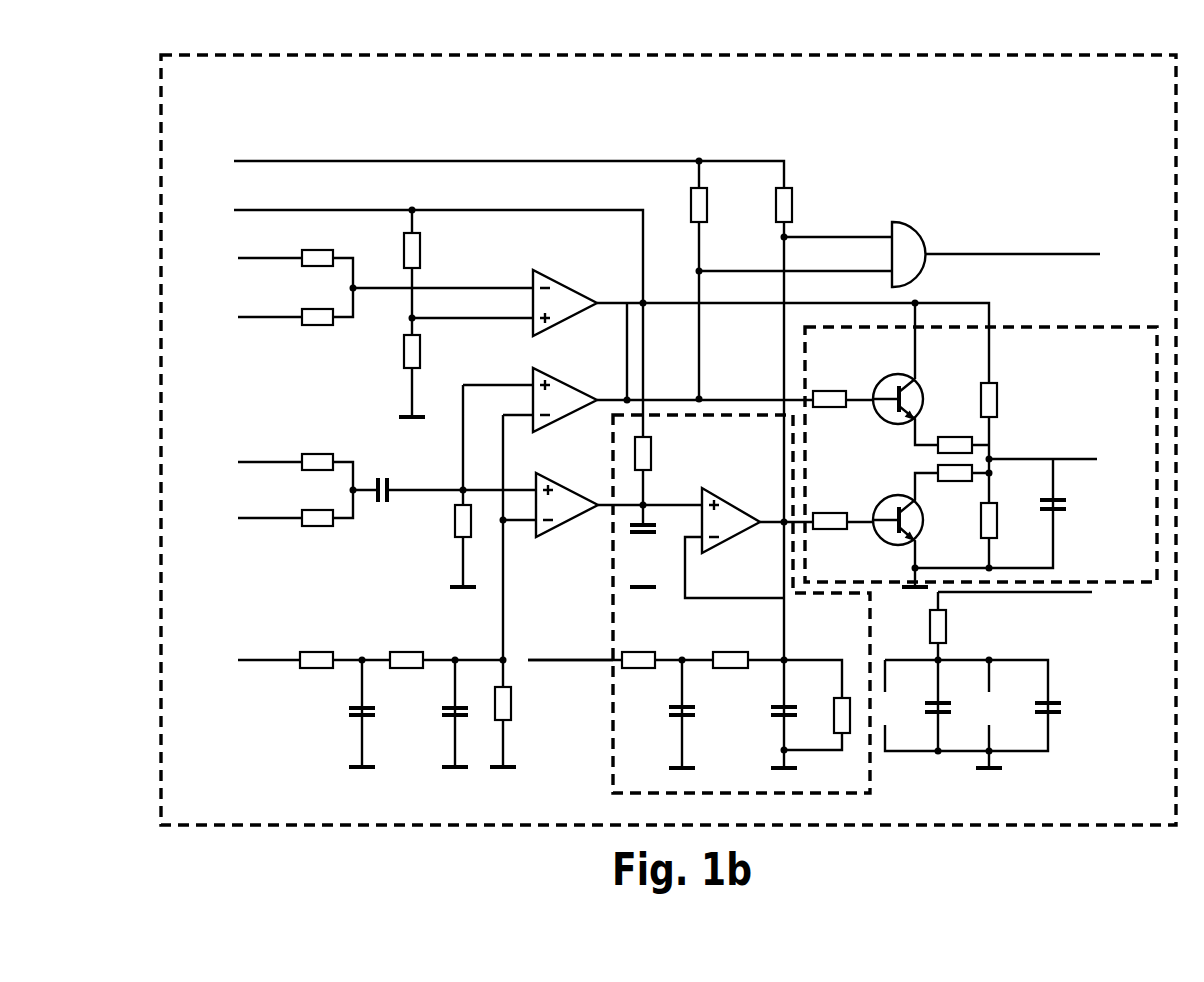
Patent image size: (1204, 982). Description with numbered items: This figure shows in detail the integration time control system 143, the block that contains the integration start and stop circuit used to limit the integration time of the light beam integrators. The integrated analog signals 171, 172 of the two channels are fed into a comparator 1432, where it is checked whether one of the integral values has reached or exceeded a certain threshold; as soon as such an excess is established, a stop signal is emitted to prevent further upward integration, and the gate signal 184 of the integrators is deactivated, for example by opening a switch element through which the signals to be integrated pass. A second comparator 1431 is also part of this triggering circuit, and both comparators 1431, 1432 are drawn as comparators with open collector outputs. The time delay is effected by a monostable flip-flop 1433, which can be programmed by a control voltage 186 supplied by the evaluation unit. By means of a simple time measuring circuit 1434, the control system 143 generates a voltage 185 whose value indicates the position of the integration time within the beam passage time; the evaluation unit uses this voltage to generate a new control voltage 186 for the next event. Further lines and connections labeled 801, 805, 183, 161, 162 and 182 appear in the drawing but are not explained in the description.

The integration time control system 143 is at (668, 440).
The supply voltage 801 is at (518, 160).
The reference voltage 805 is at (530, 208).
The comparator 1432 is at (530, 280).
The threshold voltage divider 183 is at (452, 322).
The integrator signal 171 is at (252, 262).
The integrator signal 172 is at (253, 323).
The comparator 1431 is at (575, 413).
The signal 1 input 161 is at (253, 465).
The signal 2 input 162 is at (253, 521).
The monostable flip-flop 1433 is at (700, 604).
The time measuring circuit 1434 is at (981, 457).
The gate signal 184 is at (982, 250).
The voltage 185 is at (1028, 457).
The threshold input 182 is at (245, 668).
The control voltage 186 is at (570, 668).